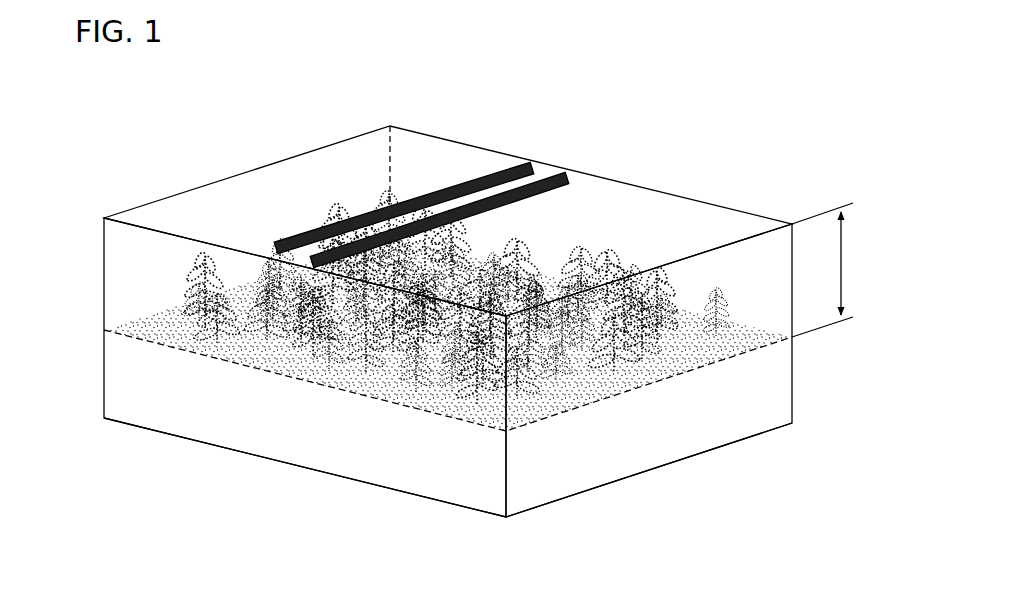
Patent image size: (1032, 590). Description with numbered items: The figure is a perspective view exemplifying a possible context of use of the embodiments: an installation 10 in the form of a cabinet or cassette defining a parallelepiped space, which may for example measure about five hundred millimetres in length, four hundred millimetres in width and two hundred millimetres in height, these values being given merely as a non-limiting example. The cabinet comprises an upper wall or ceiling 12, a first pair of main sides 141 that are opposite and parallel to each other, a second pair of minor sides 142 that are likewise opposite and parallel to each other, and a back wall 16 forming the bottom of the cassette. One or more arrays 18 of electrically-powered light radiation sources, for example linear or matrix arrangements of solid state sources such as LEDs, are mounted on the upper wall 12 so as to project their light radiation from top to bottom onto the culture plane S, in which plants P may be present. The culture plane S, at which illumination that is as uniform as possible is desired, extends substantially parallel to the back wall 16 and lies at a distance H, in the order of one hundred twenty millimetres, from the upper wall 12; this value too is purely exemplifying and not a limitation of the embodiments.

The installation 10 is at (731, 151).
The upper wall 12 is at (340, 160).
The main sides 141 is at (797, 267).
The minor sides 142 is at (103, 292).
The back wall 16 is at (345, 483).
The arrays of light radiation sources 18 is at (484, 166).
The plants P is at (310, 220).
The culture plane S is at (753, 350).
The distance H is at (843, 278).